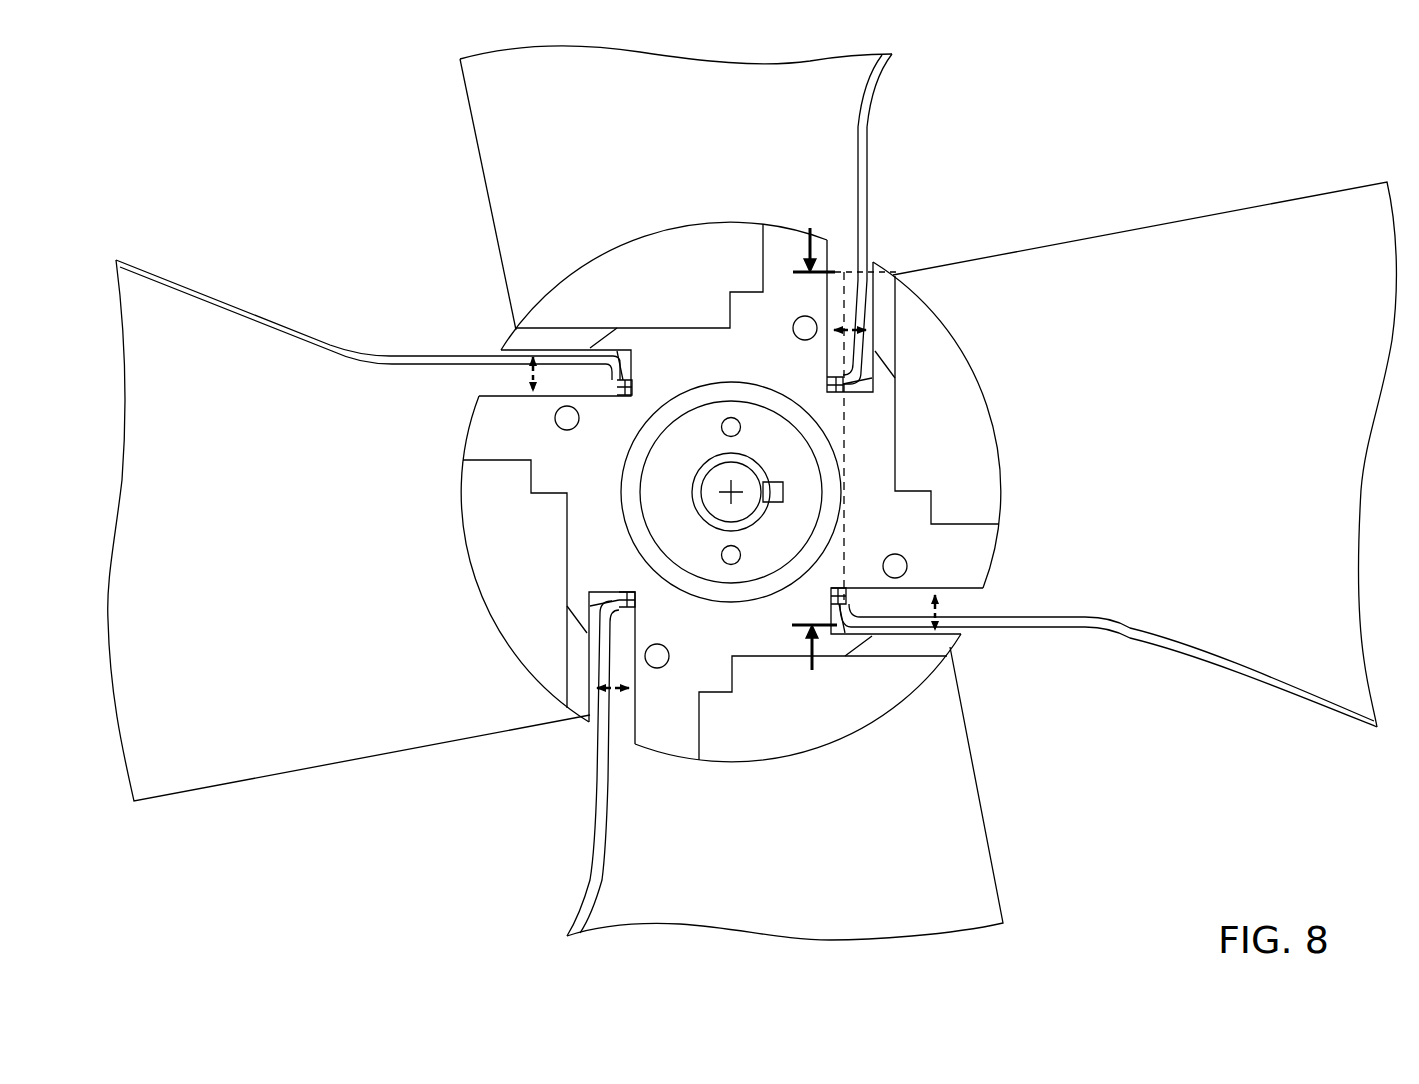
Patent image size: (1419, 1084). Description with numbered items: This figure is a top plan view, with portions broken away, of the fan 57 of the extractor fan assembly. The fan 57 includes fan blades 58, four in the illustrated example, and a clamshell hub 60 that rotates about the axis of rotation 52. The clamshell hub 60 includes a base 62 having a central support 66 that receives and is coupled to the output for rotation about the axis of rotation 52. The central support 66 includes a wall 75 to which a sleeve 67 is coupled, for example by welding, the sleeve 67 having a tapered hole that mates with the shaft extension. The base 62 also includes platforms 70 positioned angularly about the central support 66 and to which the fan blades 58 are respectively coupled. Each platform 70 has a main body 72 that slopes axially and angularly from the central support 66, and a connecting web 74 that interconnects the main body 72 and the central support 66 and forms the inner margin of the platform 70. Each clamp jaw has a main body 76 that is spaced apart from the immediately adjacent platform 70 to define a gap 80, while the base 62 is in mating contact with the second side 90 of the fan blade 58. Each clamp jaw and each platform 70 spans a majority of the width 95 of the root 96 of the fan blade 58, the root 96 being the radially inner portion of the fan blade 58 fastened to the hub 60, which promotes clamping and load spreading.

The axis of rotation 52 is at (734, 492).
The fan 57 is at (1226, 816).
The fan blades 58 is at (837, 87).
The clamshell hub 60 is at (418, 266).
The base 62 is at (924, 725).
The central support 66 is at (702, 372).
The sleeve 67 is at (692, 470).
The platforms 70 is at (653, 214).
The main body 72 is at (602, 277).
The connecting web 74 is at (563, 338).
The wall 75 is at (660, 360).
The main body 76 is at (872, 252).
The gap 80 is at (895, 365).
The second side 90 is at (502, 148).
The width 95 is at (796, 228).
The root 96 is at (826, 356).